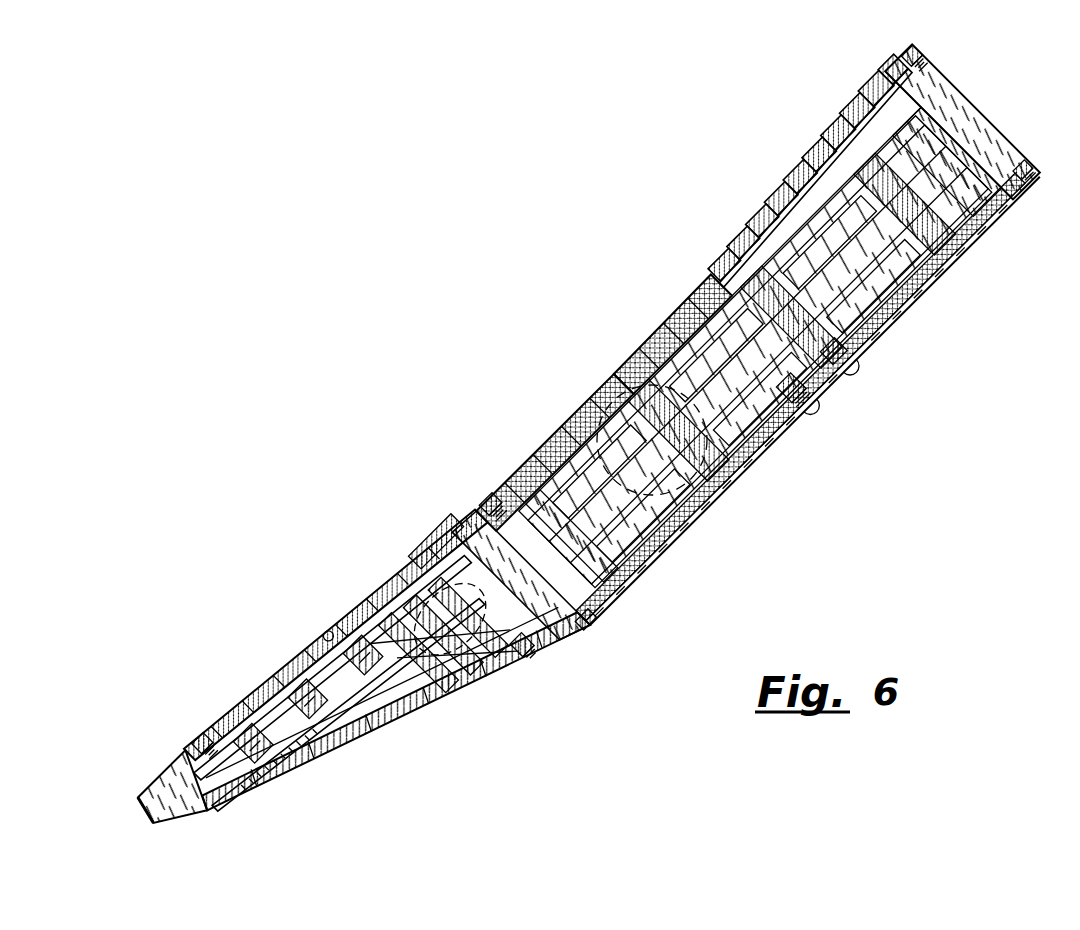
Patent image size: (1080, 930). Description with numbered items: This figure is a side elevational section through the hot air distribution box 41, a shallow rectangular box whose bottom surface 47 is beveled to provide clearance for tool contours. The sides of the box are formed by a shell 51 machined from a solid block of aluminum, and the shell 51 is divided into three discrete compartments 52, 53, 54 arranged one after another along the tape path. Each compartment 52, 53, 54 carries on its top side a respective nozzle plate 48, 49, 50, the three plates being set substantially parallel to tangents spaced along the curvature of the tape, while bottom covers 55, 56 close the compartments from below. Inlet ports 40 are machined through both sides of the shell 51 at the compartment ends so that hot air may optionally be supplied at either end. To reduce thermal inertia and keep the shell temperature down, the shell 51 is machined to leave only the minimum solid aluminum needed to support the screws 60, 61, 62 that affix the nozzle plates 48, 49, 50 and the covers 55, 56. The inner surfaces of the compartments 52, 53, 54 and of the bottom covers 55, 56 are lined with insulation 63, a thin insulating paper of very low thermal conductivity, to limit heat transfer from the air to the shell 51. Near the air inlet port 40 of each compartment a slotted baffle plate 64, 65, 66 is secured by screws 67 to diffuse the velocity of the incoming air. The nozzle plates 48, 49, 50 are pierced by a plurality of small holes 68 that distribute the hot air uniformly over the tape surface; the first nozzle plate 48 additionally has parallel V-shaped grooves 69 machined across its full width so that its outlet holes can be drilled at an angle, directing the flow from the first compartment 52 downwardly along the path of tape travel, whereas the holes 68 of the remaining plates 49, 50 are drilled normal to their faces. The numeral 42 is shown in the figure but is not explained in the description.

The inlet port 40 is at (963, 266).
The hot air distribution box 41 is at (131, 800).
The drive rod 42 is at (333, 639).
The bottom surface 47 is at (203, 816).
The first nozzle plate 48 is at (865, 100).
The second nozzle plate 49 is at (545, 450).
The third nozzle plate 50 is at (292, 678).
The shell 51 is at (957, 93).
The first compartment 52 is at (838, 135).
The second compartment 53 is at (645, 360).
The third compartment 54 is at (381, 650).
The bottom cover 55 is at (627, 577).
The bottom cover 56 is at (445, 690).
The screw 60 is at (907, 62).
The screw 61 is at (598, 622).
The screw 62 is at (530, 650).
The insulation 63 is at (845, 362).
The slotted baffle plate 64 is at (820, 175).
The slotted baffle plate 65 is at (612, 402).
The slotted baffle plate 66 is at (390, 625).
The screw 67 is at (904, 300).
The small holes 68 is at (760, 240).
The V-shaped grooves 69 is at (785, 210).